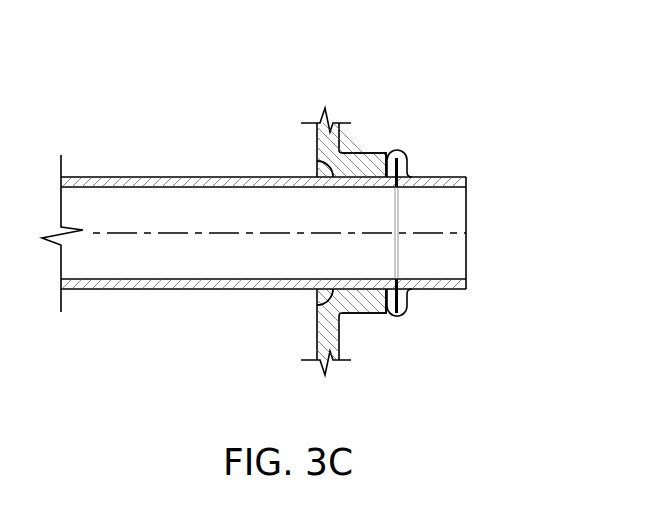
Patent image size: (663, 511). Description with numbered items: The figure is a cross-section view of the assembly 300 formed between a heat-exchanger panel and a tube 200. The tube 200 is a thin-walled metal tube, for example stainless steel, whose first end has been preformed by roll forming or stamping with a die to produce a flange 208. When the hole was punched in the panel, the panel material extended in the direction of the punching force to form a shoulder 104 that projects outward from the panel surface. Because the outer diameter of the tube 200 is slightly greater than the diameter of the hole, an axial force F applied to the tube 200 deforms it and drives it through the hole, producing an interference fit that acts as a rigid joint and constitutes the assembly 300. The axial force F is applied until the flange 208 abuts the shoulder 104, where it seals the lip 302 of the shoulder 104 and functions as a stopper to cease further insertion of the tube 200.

The tube 200 is at (433, 168).
The shoulder 104 is at (357, 156).
The lip 302 is at (378, 160).
The assembly 300 is at (307, 172).
The flange 208 is at (397, 318).
The axial force F is at (470, 233).